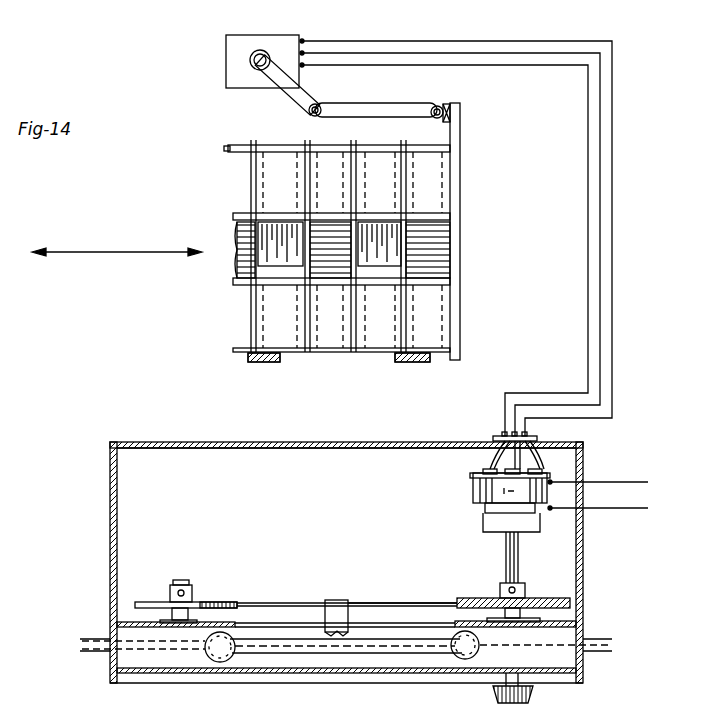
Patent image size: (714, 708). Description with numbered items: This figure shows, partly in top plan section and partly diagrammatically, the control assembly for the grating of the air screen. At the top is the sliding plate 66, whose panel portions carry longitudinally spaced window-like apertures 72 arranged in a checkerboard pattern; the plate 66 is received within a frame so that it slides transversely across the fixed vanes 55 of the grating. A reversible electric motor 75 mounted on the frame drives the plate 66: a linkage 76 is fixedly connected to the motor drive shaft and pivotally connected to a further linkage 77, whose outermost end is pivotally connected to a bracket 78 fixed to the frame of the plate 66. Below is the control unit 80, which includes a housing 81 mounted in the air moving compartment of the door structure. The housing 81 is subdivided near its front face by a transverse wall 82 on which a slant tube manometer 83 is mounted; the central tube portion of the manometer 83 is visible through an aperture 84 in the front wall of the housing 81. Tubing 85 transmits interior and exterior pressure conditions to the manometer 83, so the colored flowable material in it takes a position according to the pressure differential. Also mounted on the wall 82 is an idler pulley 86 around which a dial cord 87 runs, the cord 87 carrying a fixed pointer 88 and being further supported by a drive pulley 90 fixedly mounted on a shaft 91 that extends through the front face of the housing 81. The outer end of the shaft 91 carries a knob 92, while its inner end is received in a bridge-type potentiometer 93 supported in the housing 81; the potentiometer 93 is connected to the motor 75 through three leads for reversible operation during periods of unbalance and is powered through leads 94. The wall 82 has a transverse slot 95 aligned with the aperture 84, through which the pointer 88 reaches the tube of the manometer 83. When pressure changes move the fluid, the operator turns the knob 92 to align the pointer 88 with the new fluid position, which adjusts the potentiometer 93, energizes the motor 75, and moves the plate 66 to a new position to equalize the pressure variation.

The vanes 55 is at (362, 361).
The plate 66 is at (462, 179).
The apertures 72 is at (327, 165).
The reversible electric motor 75 is at (226, 38).
The linkage 76 is at (293, 96).
The further linkage 77 is at (397, 92).
The bracket 78 is at (446, 117).
The control unit 80 is at (108, 452).
The housing 81 is at (203, 446).
The transverse wall 82 is at (130, 623).
The slant tube manometer 83 is at (258, 658).
The aperture 84 is at (447, 666).
The tubing 85 is at (88, 624).
The idler pulley 86 is at (206, 603).
The dial cord 87 is at (312, 604).
The pointer 88 is at (338, 600).
The drive pulley 90 is at (480, 582).
The shaft 91 is at (510, 557).
The knob 92 is at (535, 698).
The bridge-type potentiometer 93 is at (473, 498).
The leads 94 is at (622, 483).
The transverse slot 95 is at (413, 613).